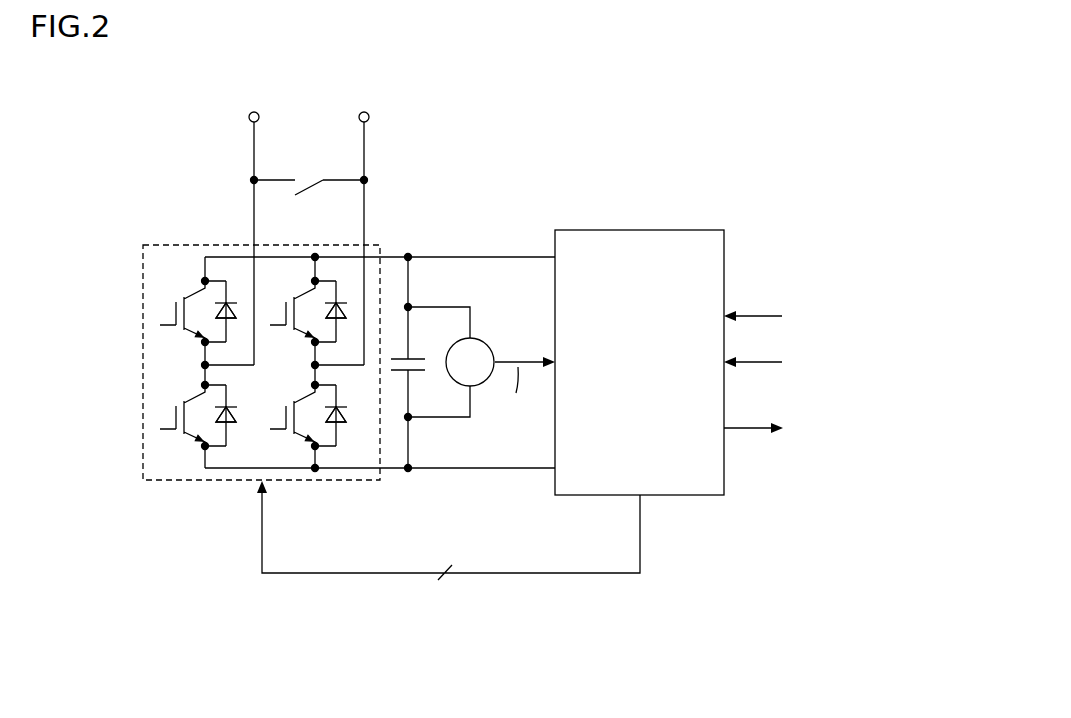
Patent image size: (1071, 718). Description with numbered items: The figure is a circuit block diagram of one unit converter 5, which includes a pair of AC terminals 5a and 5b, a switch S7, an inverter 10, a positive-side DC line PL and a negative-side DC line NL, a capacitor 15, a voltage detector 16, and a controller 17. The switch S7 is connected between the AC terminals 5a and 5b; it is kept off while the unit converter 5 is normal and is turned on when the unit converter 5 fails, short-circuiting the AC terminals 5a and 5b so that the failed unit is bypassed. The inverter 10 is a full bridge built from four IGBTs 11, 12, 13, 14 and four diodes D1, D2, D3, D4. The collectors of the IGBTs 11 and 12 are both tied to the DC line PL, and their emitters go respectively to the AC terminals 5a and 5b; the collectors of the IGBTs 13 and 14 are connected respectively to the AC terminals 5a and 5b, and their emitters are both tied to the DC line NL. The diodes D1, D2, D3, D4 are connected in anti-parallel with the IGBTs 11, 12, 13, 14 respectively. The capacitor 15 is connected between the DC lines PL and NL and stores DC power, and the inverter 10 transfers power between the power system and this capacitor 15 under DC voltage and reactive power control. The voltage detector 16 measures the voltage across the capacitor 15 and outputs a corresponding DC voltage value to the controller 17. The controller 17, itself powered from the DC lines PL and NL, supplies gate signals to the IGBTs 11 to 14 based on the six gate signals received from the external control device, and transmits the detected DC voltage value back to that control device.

The unit converter 5 is at (133, 118).
The AC terminal 5a is at (249, 112).
The AC terminal 5b is at (369, 112).
The switch S7 is at (307, 179).
The inverter 10 is at (160, 245).
The IGBT 11 is at (174, 314).
The IGBT 12 is at (284, 314).
The IGBT 13 is at (174, 418).
The IGBT 14 is at (284, 418).
The diode D1 is at (237, 301).
The diode D2 is at (347, 301).
The diode D3 is at (238, 422).
The diode D4 is at (348, 422).
The positive-side DC line PL is at (455, 256).
The negative-side DC line NL is at (449, 469).
The capacitor 15 is at (420, 356).
The voltage detector 16 is at (487, 344).
The controller 17 is at (681, 229).